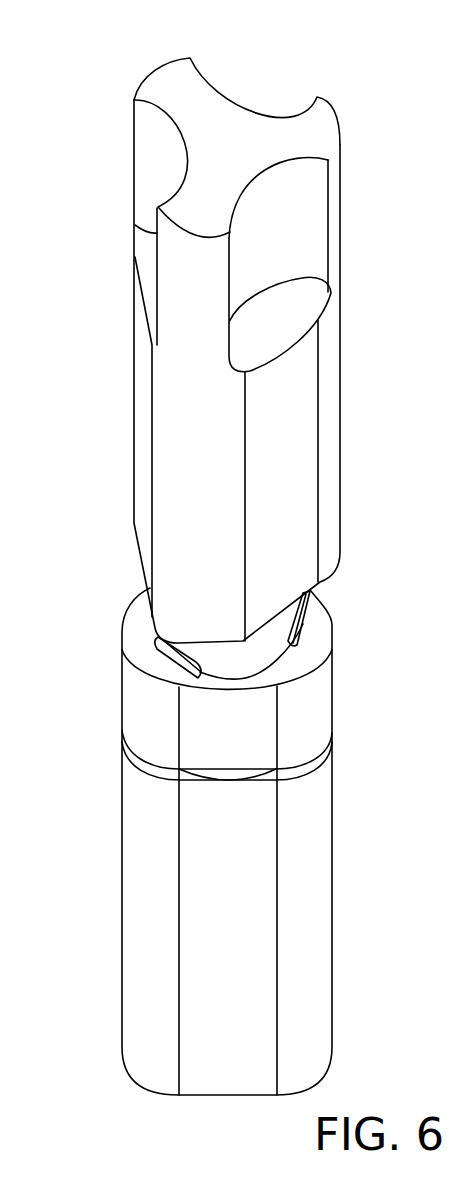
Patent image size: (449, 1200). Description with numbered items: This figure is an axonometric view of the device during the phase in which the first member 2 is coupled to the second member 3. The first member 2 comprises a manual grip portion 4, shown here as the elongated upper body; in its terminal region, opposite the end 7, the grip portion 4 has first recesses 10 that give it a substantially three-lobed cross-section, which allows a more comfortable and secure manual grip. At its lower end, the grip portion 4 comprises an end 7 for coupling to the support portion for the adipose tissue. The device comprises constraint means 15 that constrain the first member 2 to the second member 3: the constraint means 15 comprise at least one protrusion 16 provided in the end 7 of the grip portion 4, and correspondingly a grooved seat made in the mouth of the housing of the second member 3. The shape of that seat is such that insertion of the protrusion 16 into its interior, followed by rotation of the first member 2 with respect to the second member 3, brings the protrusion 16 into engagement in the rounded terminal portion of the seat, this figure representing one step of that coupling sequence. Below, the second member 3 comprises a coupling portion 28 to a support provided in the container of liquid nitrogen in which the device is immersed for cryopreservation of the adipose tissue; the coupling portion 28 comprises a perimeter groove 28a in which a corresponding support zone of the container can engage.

The first member 2 is at (109, 555).
The second member 3 is at (107, 992).
The manual grip portion 4 is at (111, 327).
The end 7 is at (268, 652).
The first recesses 10 is at (150, 147).
The constraint means 15 is at (121, 637).
The protrusion 16 is at (303, 623).
The coupling portion 28 is at (346, 745).
The perimeter groove 28a is at (170, 784).